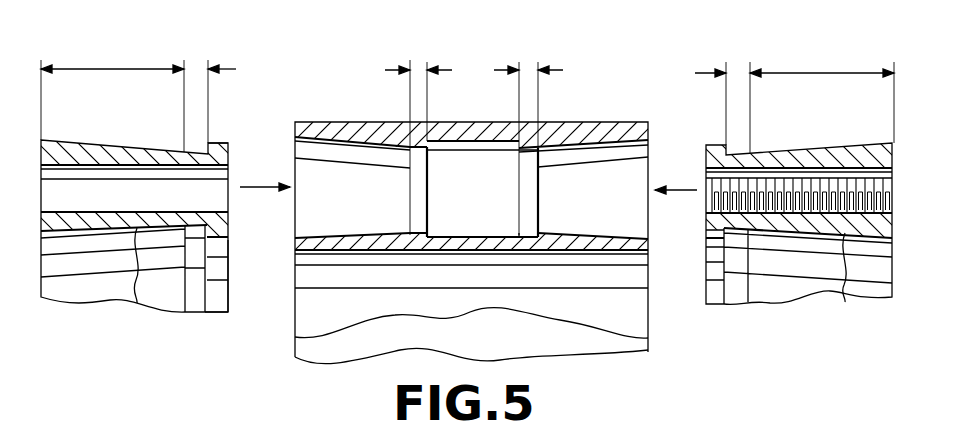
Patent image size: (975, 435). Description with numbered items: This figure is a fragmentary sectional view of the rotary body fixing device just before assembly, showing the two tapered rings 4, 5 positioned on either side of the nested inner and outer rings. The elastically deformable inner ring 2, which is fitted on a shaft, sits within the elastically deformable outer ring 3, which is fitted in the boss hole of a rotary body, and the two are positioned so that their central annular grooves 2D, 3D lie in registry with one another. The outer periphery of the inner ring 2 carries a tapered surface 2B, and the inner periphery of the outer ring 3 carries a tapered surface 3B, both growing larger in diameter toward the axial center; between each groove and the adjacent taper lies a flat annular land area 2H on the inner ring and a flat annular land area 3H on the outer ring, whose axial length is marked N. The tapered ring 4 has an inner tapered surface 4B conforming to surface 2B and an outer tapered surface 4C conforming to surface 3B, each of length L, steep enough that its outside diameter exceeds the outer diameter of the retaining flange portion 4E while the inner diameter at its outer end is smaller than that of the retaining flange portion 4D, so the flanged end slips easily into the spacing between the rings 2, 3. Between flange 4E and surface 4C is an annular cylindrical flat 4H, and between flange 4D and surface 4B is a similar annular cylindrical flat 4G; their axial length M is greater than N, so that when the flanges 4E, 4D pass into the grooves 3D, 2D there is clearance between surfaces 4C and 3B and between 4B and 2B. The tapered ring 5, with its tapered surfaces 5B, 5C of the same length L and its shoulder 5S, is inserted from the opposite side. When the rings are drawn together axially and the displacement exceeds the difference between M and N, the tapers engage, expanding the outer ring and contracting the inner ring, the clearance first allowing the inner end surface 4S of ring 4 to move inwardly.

The inner ring 2 is at (445, 290).
The tapered surface 2B is at (313, 237).
The annular groove 2D is at (494, 233).
The flat annular land area 2H is at (418, 230).
The outer ring 3 is at (616, 132).
The tapered surface 3B is at (327, 142).
The annular groove 3D is at (498, 143).
The flat annular land area 3H is at (415, 152).
The tapered ring 4 is at (100, 277).
The tapered surface 4B is at (132, 278).
The tapered surface 4C is at (100, 142).
The retaining flange portion 4D is at (215, 308).
The retaining flange portion 4E is at (217, 142).
The annular cylindrical flat 4G is at (195, 227).
The annular cylindrical flat 4H is at (193, 150).
The inner end surface 4S is at (229, 277).
The tapered ring 5 is at (809, 272).
The tapered surface 5B is at (845, 283).
The tapered surface 5C is at (798, 153).
The shoulder of second ferrule 5S is at (706, 284).
The length of the tapered surface L is at (110, 68).
The axial length of the flats M is at (197, 152).
The length of the annular flats N is at (418, 80).